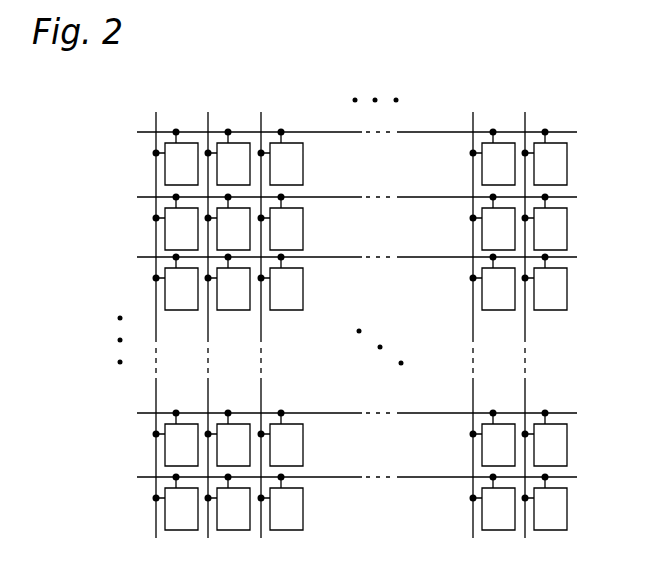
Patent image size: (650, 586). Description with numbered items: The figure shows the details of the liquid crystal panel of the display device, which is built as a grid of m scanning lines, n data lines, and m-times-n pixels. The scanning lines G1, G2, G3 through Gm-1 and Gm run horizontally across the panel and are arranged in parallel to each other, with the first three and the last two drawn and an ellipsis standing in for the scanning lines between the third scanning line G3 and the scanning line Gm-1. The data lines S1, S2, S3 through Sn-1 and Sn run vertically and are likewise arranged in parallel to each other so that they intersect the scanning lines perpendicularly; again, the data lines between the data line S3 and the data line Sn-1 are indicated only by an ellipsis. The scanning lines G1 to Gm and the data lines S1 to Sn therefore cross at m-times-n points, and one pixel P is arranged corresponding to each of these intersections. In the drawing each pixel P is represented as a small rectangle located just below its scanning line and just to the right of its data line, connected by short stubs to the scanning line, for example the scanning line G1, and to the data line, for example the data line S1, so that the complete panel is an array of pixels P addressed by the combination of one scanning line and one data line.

The pixel P is at (303, 290).
The data line S1 is at (155, 315).
The data line S2 is at (207, 315).
The data line S3 is at (260, 315).
The data line Sn-1 is at (472, 315).
The data line Sn is at (526, 315).
The scanning line G1 is at (345, 133).
The scanning line G2 is at (344, 198).
The scanning line G3 is at (344, 258).
The scanning line Gm-1 is at (333, 414).
The scanning line Gm is at (344, 478).